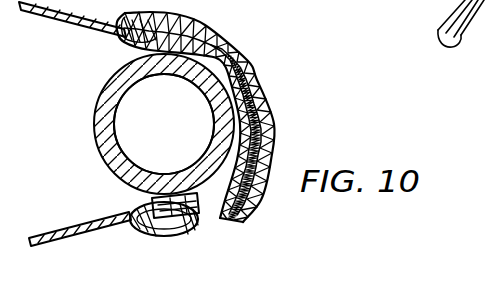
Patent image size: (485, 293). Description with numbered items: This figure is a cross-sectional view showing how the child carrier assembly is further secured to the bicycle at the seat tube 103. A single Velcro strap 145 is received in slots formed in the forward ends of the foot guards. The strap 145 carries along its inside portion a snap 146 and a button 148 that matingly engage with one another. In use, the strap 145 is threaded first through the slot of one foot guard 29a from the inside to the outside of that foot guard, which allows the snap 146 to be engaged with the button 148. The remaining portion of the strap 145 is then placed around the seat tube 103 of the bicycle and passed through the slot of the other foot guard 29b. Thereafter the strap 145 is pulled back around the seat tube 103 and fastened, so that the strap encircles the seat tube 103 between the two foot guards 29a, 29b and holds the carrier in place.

The seat tube 103 is at (96, 112).
The snap 146 is at (164, 174).
The Velcro strap 145 is at (200, 226).
The foot guard 29a is at (68, 228).
The foot guard 29b is at (56, 27).
The button 148 is at (137, 237).